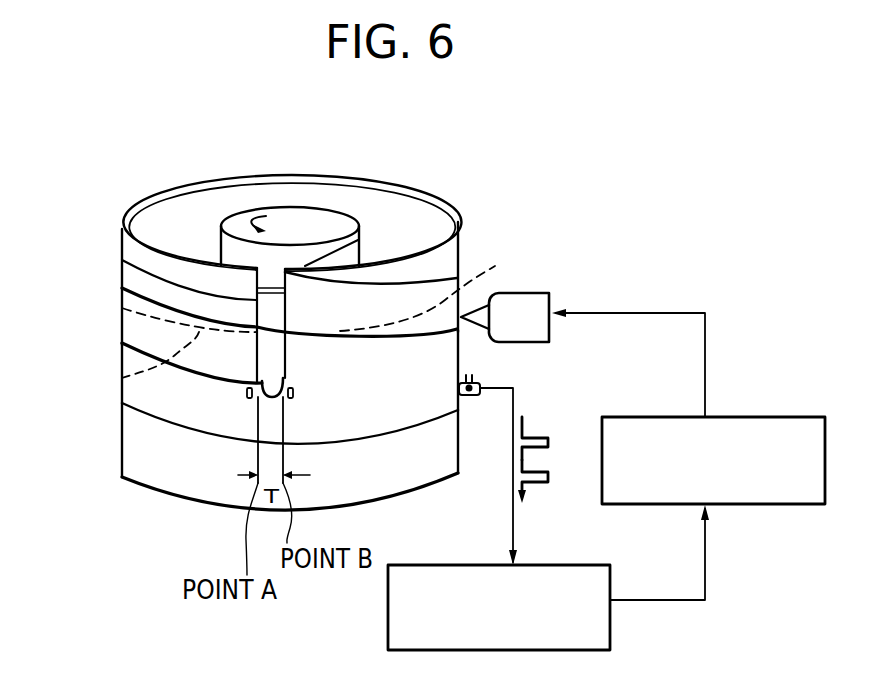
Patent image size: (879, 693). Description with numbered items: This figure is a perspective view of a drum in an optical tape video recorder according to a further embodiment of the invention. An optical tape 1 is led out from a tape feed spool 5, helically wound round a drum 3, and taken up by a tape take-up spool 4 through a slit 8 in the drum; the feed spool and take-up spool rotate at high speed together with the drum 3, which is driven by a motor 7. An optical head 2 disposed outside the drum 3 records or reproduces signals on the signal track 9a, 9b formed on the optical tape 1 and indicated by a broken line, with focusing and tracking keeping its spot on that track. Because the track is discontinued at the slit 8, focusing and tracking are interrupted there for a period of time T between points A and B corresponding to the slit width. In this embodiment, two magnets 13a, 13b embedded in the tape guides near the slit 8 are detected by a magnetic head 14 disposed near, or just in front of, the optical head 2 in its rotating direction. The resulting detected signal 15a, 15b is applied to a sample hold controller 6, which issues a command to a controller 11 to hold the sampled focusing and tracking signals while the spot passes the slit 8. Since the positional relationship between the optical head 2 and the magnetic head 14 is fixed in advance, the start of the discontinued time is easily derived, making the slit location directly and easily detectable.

The optical tape 1 is at (138, 336).
The optical head 2 is at (532, 300).
The drum 3 is at (447, 258).
The tape take-up spool 4 is at (327, 222).
The tape feed spool 5 is at (120, 262).
The sample hold controller 6 is at (611, 580).
The motor 7 is at (440, 458).
The slit 8 is at (283, 377).
The signal track 9a is at (122, 378).
The signal track 9b is at (436, 289).
The controller 11 is at (748, 418).
The magnet 13a is at (249, 398).
The magnet 13b is at (291, 398).
The magnetic head 14 is at (480, 380).
The detected signal 15a is at (535, 486).
The detected signal 15b is at (541, 437).